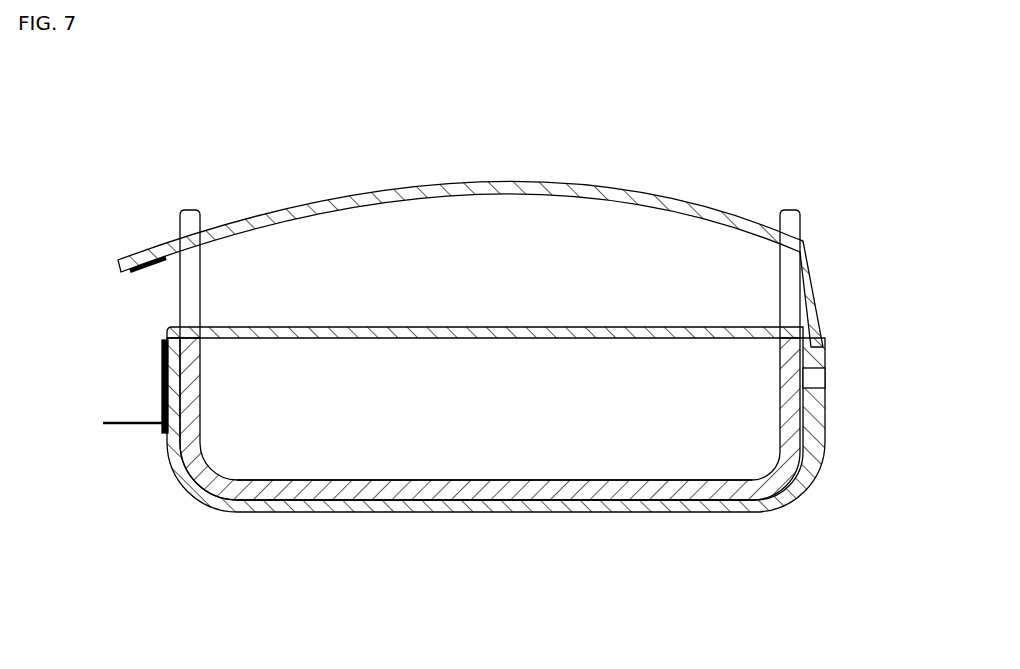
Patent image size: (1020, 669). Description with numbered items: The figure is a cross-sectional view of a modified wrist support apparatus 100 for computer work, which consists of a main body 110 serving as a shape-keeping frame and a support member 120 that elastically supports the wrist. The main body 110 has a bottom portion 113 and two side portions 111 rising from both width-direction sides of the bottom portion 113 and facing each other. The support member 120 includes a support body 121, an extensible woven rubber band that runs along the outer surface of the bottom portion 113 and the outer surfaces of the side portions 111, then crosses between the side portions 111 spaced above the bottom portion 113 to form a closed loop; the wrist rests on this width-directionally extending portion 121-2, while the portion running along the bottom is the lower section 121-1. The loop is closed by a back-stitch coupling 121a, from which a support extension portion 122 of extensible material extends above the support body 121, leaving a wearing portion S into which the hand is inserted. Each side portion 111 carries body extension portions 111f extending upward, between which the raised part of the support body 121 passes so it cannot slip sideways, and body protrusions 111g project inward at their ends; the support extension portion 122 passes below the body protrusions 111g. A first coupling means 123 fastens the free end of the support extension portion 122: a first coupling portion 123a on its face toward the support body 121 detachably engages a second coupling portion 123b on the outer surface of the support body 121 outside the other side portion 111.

The wrist support apparatus 100 is at (297, 93).
The main body 110 is at (470, 227).
The support extension portion 122 is at (492, 188).
The wearing portion S is at (415, 248).
The support member 120 is at (524, 387).
The support body 121 is at (496, 460).
The bottom portion of outer case 121-1 is at (606, 505).
The width-directionally extending portion 121-2 is at (483, 336).
The back-stitch coupling 121a is at (818, 375).
The side portion 111 is at (495, 371).
The body extension portion 111f is at (196, 285).
The body protrusion 111g is at (188, 212).
The bottom portion 113 is at (508, 492).
The first coupling means 123 is at (99, 353).
The first coupling portion 123a is at (143, 272).
The second coupling portion 123b is at (161, 410).